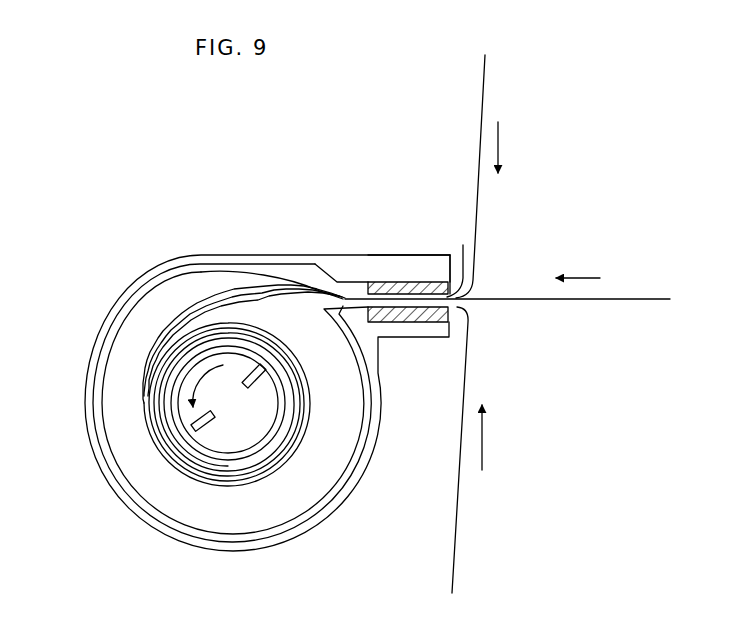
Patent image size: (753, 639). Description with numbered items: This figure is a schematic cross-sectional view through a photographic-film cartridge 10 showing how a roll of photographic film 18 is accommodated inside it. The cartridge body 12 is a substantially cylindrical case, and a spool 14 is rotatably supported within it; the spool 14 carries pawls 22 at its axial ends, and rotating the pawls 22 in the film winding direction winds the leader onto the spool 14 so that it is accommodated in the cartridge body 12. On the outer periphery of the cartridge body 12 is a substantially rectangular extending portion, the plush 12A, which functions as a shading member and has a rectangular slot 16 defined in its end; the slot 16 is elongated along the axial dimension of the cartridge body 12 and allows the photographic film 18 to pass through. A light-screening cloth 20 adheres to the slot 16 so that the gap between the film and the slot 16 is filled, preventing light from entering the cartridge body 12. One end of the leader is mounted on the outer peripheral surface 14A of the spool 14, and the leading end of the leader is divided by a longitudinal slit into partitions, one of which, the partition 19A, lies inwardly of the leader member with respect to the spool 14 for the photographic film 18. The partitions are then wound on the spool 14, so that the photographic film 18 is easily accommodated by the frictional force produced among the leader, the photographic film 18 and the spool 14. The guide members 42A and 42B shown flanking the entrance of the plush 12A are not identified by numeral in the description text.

The photographic-film cartridge 10 is at (212, 214).
The cartridge body 12 is at (117, 297).
The plush 12A is at (386, 253).
The spool 14 is at (248, 424).
The outer peripheral surface 14A is at (238, 462).
The slot 16 is at (463, 250).
The photographic film 18 is at (649, 297).
The partition 19A is at (203, 478).
The light-screening cloth 20 is at (424, 281).
The pawls 22 is at (200, 423).
The lower guide plate 42A is at (455, 527).
The upper guide plate 42B is at (481, 114).